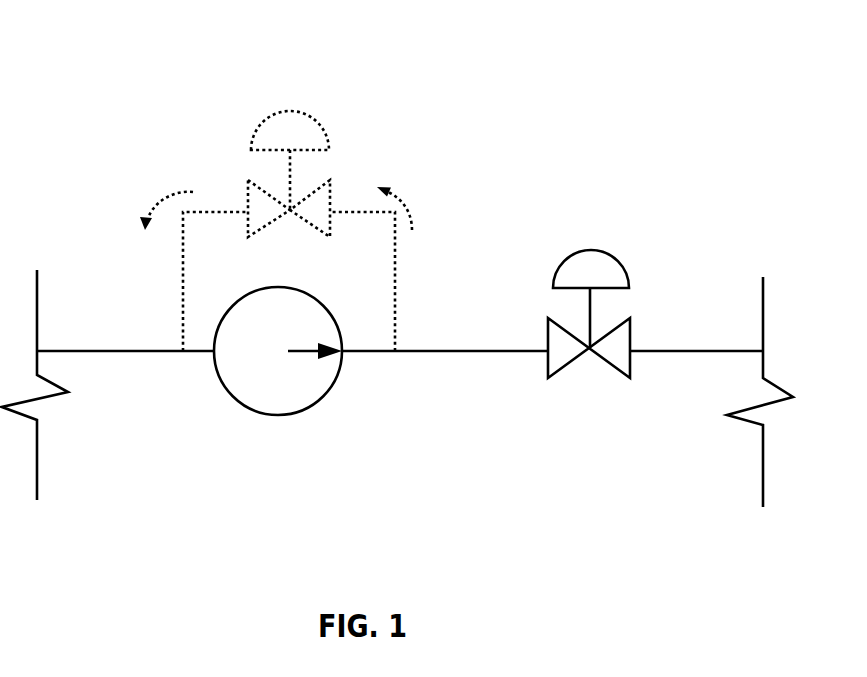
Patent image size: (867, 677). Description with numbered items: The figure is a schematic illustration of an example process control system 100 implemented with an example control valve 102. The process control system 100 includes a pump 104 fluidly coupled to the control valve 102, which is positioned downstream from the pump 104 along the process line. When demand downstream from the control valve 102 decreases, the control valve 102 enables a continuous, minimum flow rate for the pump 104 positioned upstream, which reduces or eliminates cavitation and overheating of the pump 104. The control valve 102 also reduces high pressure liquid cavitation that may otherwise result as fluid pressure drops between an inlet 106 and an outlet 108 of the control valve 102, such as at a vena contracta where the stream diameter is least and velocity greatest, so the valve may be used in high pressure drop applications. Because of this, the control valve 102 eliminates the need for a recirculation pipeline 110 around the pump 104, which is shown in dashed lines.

The process control system 100 is at (676, 40).
The control valve 102 is at (610, 262).
The pump 104 is at (288, 415).
The inlet 106 is at (547, 362).
The outlet 108 is at (630, 362).
The recirculation pipeline 110 is at (392, 145).